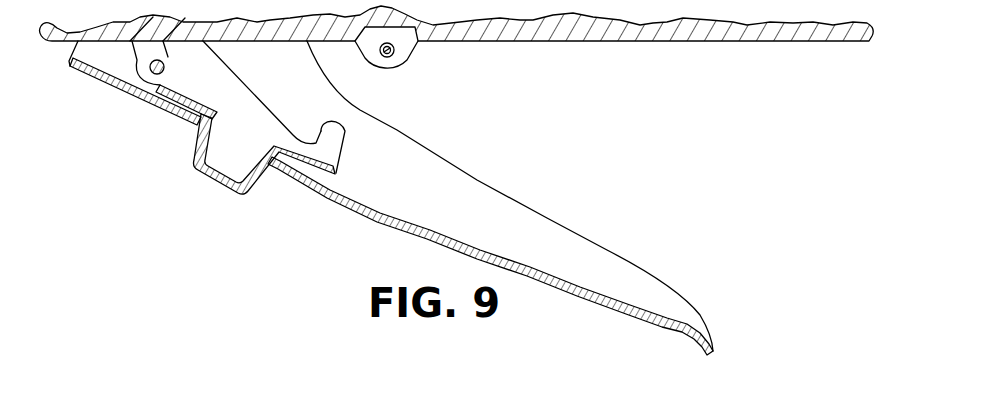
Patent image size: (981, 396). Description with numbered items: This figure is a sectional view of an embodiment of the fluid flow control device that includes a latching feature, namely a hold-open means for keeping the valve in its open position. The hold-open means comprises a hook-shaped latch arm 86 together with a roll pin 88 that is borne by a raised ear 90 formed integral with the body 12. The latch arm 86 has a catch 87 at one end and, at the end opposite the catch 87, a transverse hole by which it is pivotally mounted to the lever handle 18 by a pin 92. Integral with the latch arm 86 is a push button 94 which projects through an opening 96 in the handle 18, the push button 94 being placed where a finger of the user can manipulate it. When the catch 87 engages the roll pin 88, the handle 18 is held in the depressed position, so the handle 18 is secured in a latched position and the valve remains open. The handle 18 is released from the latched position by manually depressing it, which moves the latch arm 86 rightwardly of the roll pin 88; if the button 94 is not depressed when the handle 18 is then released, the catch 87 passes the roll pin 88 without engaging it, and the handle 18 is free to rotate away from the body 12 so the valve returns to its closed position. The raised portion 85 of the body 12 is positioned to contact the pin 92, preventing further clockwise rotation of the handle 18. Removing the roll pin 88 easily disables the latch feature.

The body 12 is at (677, 41).
The lever handle 18 is at (418, 238).
The raised portion 85 is at (148, 64).
The latch arm 86 is at (242, 99).
The catch 87 is at (341, 137).
The roll pin 88 is at (395, 54).
The raised ear 90 is at (376, 62).
The pin 92 is at (165, 70).
The push button 94 is at (217, 181).
The opening 96 is at (197, 127).